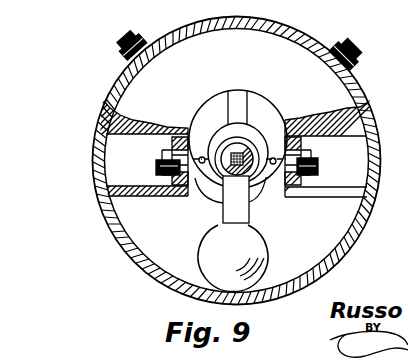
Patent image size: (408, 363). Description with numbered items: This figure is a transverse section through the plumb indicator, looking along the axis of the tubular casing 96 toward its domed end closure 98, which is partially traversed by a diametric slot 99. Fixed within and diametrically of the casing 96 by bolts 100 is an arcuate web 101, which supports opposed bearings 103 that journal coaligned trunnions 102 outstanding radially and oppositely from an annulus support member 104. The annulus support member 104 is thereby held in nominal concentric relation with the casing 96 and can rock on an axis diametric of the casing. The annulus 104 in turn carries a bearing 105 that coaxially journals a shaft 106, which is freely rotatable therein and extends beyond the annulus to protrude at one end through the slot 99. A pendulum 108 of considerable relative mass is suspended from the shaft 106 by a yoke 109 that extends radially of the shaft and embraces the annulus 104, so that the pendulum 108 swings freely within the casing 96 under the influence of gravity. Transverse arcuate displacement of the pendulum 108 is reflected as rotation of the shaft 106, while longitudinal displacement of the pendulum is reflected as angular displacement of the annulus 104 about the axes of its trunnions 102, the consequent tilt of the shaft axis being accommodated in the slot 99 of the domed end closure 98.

The tubular casing 96 is at (116, 228).
The domed end closure 98 is at (318, 246).
The diametric slot 99 is at (238, 104).
The bolts 100 is at (121, 43).
The arcuate web 101 is at (230, 60).
The trunnions 102 is at (166, 168).
The bearings 103 is at (175, 143).
The annulus support member 104 is at (206, 108).
The bearing 105 is at (252, 192).
The shaft 106 is at (246, 145).
The pendulum 108 is at (214, 255).
The yoke 109 is at (230, 202).